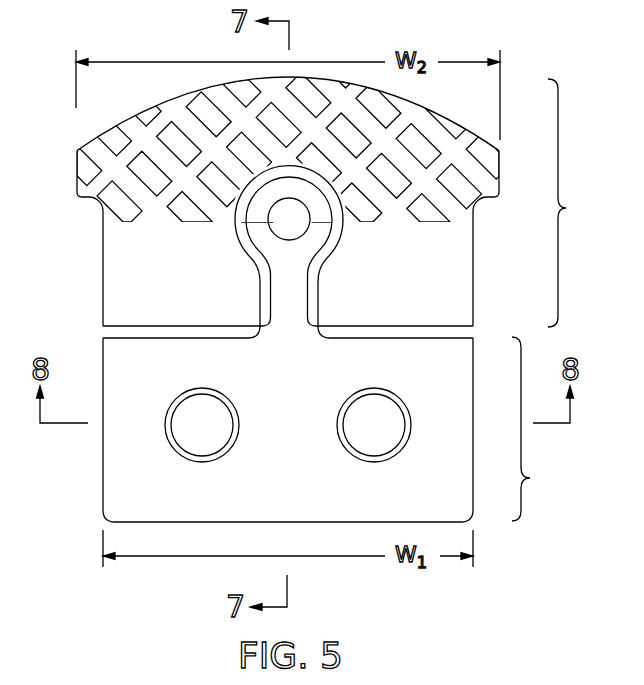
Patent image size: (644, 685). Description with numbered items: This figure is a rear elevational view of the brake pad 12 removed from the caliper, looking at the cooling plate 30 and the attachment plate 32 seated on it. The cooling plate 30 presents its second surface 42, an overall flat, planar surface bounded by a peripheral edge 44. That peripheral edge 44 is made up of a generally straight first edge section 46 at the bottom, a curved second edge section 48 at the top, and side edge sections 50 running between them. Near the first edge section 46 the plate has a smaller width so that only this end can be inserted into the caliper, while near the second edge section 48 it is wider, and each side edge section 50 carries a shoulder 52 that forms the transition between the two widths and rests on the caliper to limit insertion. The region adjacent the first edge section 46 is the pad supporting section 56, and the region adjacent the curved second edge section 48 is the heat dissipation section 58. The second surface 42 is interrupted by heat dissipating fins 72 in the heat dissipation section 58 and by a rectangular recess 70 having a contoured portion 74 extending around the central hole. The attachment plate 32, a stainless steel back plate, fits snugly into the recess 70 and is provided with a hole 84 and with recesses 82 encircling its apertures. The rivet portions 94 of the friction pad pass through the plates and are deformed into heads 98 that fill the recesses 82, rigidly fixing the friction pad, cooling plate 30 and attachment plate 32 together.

The brake pad 12 is at (319, 291).
The cooling plate 30 is at (279, 359).
The attachment plate 32 is at (281, 445).
The second surface 42 is at (133, 288).
The peripheral edge 44 is at (292, 178).
The first edge section 46 is at (268, 524).
The second edge section 48 is at (184, 97).
The side edge sections 50 is at (102, 353).
The shoulder 52 is at (90, 198).
The pad supporting section 56 is at (537, 429).
The heat dissipation section 58 is at (574, 203).
The recess 70 is at (120, 332).
The heat dissipating fins 72 is at (130, 170).
The contoured portion 74 is at (270, 252).
The recesses 82 is at (213, 395).
The hole 84 is at (273, 212).
The rivet portions 94 is at (308, 430).
The deformed heads 98 is at (200, 430).